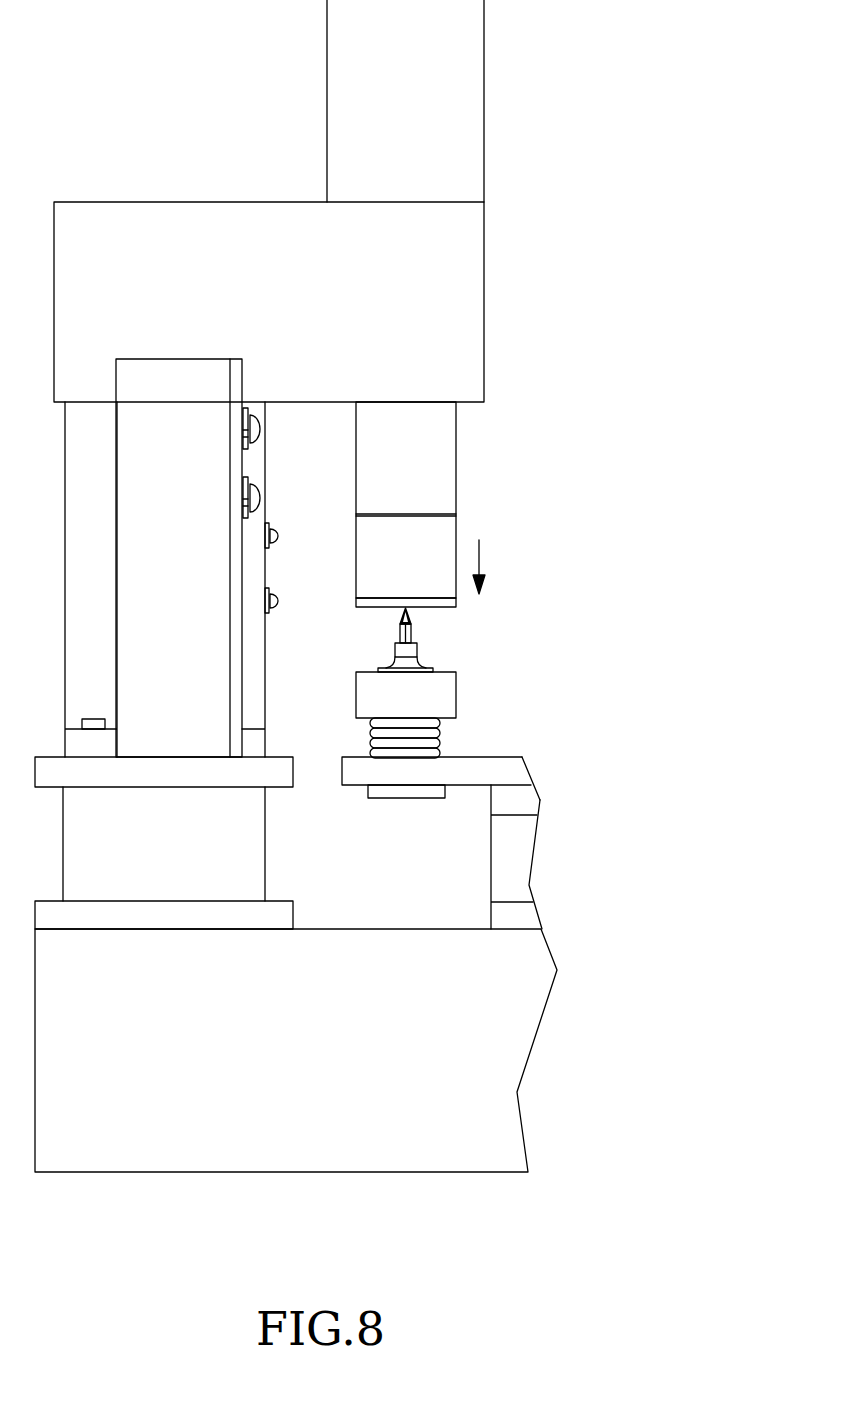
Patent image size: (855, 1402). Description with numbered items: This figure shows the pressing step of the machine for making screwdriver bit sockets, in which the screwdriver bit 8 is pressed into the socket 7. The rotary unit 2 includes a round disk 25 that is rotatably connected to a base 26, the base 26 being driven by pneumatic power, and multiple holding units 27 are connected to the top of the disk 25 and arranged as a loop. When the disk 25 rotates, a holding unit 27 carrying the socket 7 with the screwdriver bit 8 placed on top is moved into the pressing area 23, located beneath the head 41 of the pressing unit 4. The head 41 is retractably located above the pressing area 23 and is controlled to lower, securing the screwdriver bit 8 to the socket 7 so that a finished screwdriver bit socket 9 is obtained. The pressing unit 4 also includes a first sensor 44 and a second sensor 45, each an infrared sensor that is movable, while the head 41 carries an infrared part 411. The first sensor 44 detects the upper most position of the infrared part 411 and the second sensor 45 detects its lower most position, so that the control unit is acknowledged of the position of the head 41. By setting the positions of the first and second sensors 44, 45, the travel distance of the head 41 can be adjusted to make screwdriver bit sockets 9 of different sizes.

The rotary unit 2 is at (496, 834).
The pressing unit 4 is at (497, 303).
The socket 7 is at (412, 655).
The screwdriver bit 8 is at (412, 623).
The screwdriver bit socket 9 is at (451, 649).
The pressing area 23 is at (605, 663).
The disk 25 is at (510, 772).
The base 26 is at (555, 857).
The holding unit 27 is at (455, 695).
The head 41 is at (448, 527).
The first sensor 44 is at (278, 536).
The second sensor 45 is at (278, 600).
The infrared part 411 is at (455, 602).